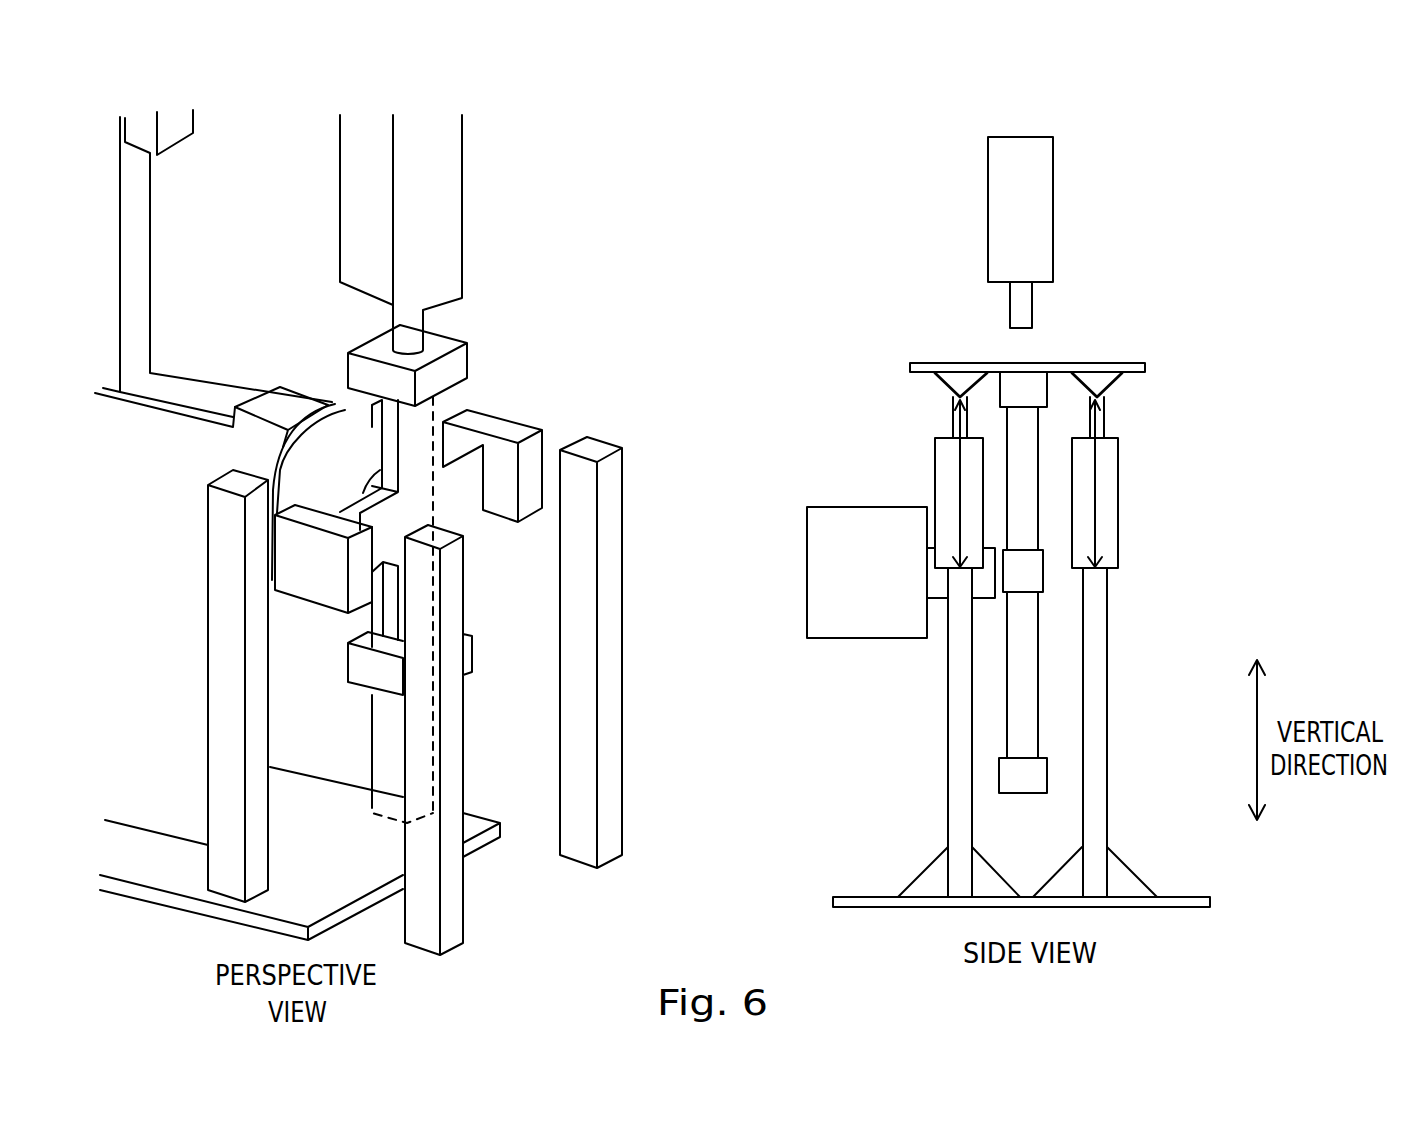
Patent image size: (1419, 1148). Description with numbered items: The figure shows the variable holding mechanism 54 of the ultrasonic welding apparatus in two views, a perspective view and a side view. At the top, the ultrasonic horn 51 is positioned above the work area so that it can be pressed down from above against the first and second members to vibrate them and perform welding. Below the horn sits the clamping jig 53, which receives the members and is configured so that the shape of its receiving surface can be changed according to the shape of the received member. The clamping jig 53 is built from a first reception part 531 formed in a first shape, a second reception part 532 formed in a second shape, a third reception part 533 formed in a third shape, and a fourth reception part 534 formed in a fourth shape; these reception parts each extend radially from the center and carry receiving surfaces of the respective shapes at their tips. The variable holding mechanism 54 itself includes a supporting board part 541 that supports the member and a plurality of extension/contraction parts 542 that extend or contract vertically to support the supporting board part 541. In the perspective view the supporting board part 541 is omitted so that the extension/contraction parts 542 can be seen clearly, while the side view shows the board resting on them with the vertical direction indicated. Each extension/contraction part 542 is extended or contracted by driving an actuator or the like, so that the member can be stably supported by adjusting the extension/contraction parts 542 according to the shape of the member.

The ultrasonic horn 51 is at (417, 320).
The clamping jig 53 is at (447, 508).
The first reception part 531 is at (367, 347).
The second reception part 532 is at (522, 432).
The third reception part 533 is at (360, 690).
The fourth reception part 534 is at (317, 597).
The variable holding mechanism 54 is at (620, 425).
The supporting board part 541 is at (1128, 363).
The extension/contraction part 542 is at (368, 415).